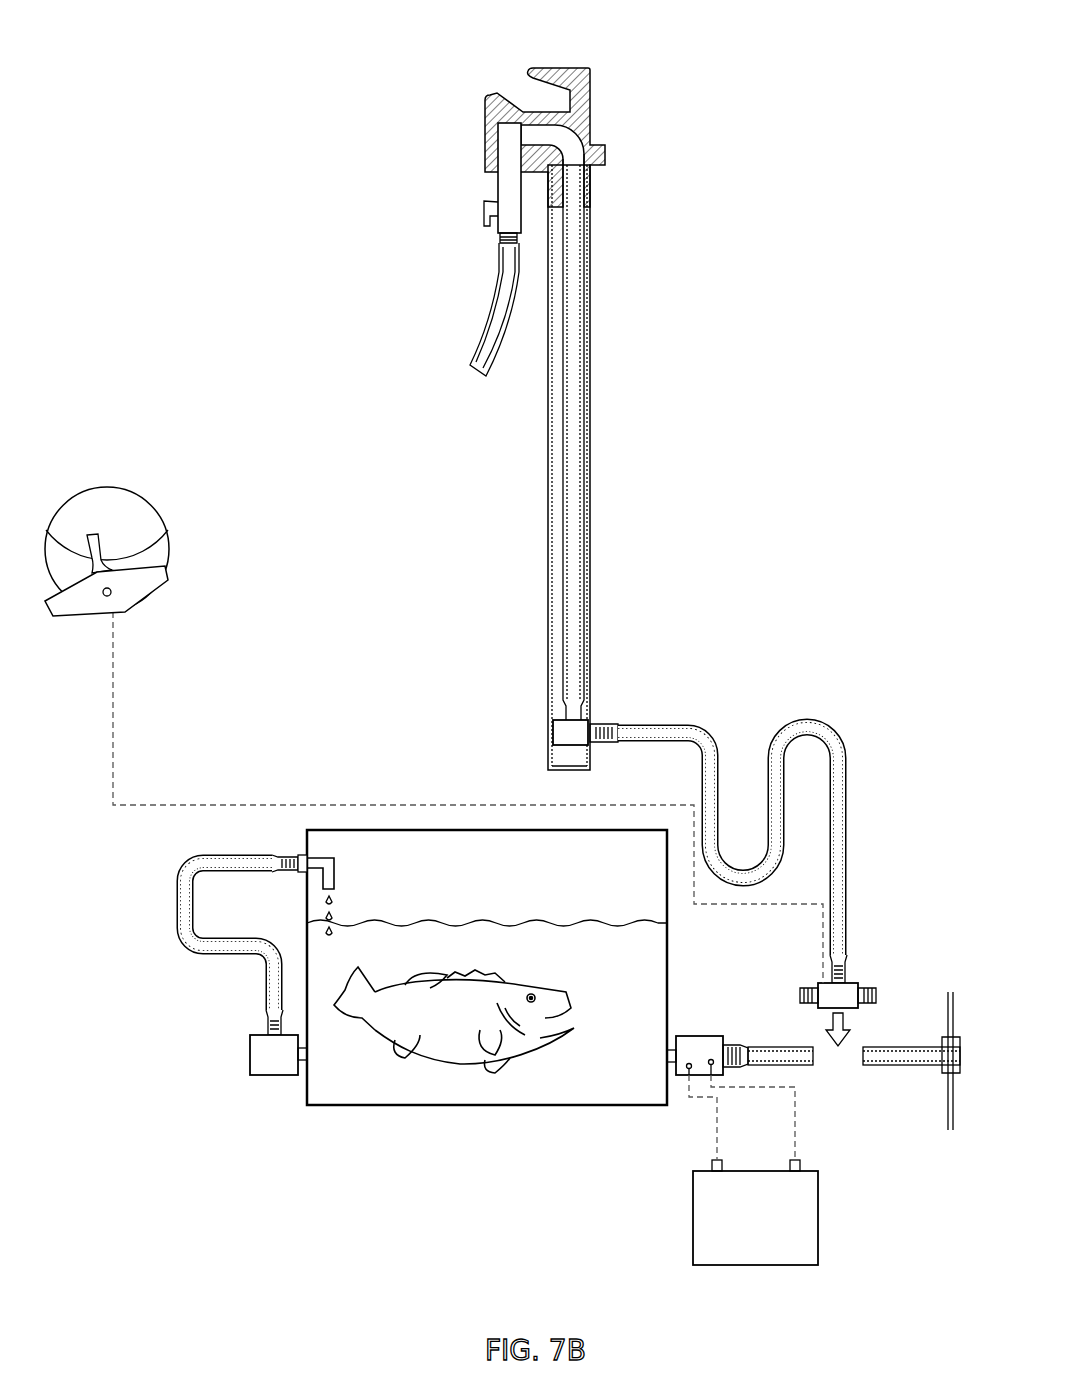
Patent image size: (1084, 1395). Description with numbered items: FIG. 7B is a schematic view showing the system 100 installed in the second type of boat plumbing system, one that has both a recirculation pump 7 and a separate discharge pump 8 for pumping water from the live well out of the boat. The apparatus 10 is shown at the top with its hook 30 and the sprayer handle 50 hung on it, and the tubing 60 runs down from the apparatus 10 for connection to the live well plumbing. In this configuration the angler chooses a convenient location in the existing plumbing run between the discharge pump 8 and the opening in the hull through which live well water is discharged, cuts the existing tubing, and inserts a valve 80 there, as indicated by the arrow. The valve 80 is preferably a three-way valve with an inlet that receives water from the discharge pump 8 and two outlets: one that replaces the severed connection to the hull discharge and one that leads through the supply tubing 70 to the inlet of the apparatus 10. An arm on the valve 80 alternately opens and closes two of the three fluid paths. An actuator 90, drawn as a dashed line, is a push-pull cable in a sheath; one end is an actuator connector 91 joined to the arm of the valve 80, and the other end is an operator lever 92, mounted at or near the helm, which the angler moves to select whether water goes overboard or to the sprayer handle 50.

The system 100 is at (502, 632).
The apparatus 10 is at (538, 385).
The hook 30 is at (530, 67).
The sprayer handle 50 is at (452, 256).
The tubing 60 is at (588, 382).
The supply tubing 70 is at (652, 724).
The valve 80 is at (860, 984).
The actuator connector 91 is at (852, 978).
The actuator 90 is at (140, 524).
The operator lever 92 is at (168, 578).
The recirculation pump 7 is at (250, 1055).
The discharge pump 8 is at (700, 1036).